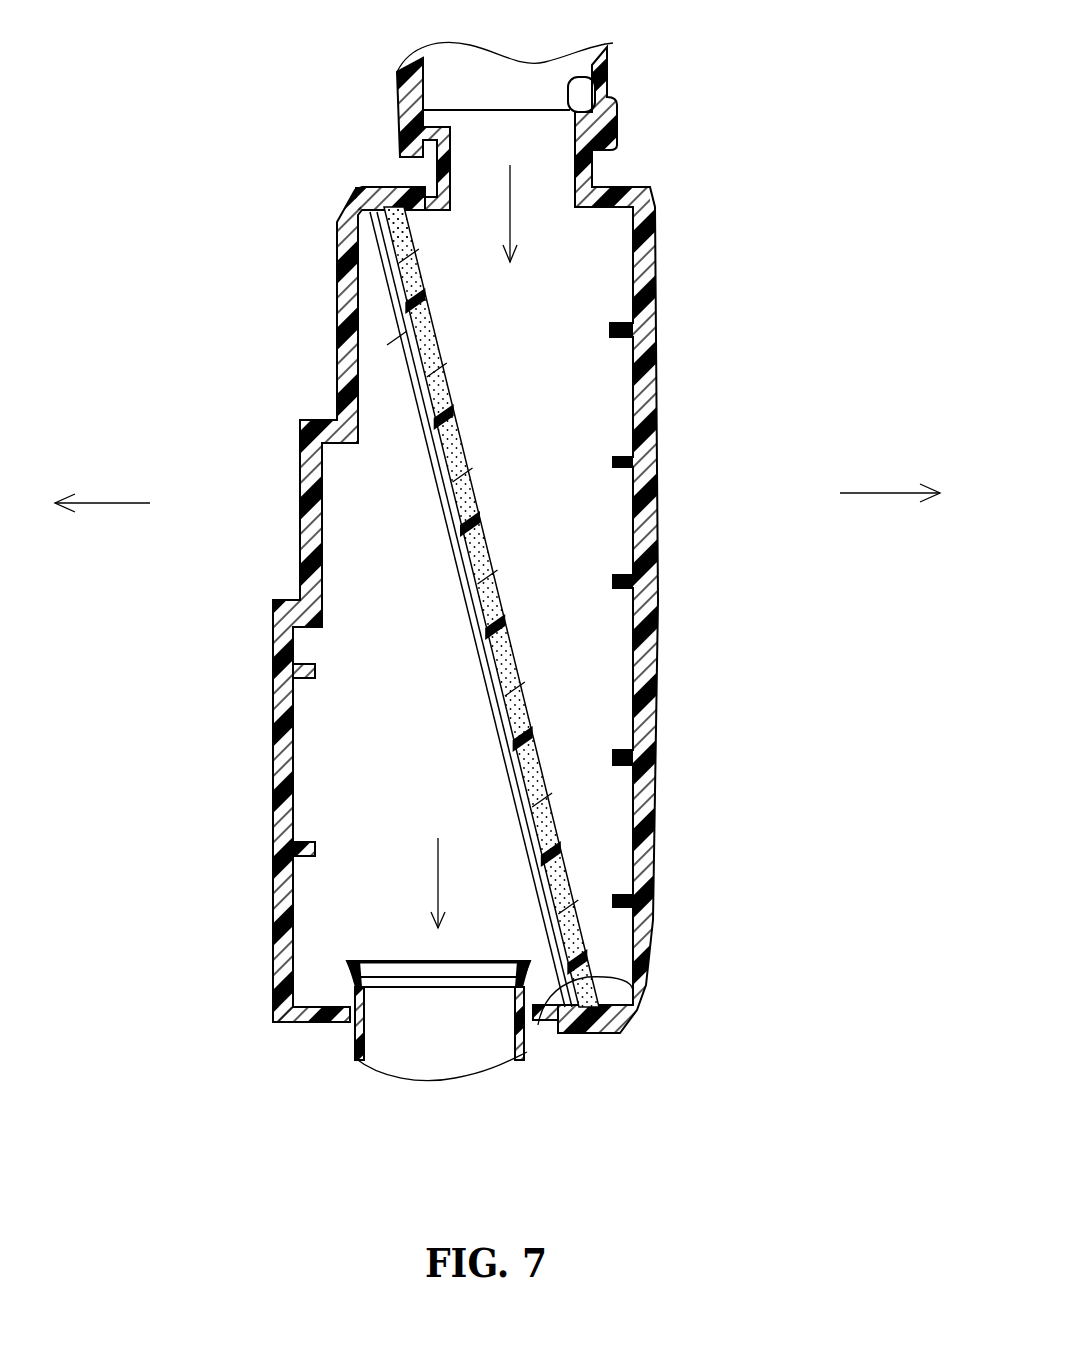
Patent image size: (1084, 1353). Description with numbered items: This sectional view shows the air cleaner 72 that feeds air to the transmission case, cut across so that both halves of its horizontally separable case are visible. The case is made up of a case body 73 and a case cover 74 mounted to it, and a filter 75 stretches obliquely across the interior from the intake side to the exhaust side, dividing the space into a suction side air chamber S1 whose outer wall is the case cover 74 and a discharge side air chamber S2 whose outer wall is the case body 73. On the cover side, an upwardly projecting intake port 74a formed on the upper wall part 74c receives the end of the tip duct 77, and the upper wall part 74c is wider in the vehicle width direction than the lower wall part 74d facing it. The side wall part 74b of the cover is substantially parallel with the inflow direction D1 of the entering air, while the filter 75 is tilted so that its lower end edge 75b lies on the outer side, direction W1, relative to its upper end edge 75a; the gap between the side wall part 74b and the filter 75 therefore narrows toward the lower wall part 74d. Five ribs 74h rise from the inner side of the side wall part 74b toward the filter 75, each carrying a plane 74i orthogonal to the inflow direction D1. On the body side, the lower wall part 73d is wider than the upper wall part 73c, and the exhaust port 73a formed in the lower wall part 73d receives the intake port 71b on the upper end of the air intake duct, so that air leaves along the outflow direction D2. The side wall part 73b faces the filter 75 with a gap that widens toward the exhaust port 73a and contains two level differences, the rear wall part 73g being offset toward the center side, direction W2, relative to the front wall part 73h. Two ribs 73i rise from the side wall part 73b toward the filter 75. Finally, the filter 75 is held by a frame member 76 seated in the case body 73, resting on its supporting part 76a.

The air cleaner 72 is at (218, 140).
The tip duct 77 is at (401, 116).
The case body 73 is at (271, 610).
The exhaust port 73a is at (368, 1012).
The side wall part 73b is at (303, 558).
The upper wall part 73c is at (375, 188).
The lower wall part 73d is at (315, 1025).
The wall part 73g is at (275, 768).
The wall part 73h is at (338, 325).
The ribs 73i is at (315, 849).
The case cover 74 is at (654, 578).
The intake port 74a is at (600, 78).
The side wall part 74b is at (658, 508).
The upper wall part 74c is at (618, 188).
The lower wall part 74d is at (600, 1035).
The ribs 74h is at (612, 457).
The plane 74i is at (618, 326).
The filter 75 is at (551, 616).
The upper end edge 75a is at (410, 218).
The lower end edge 75b is at (603, 985).
The frame member 76 is at (542, 1035).
The supporting part 76a is at (416, 408).
The intake port 71b is at (385, 960).
The inflow direction D1 is at (513, 212).
The outflow direction D2 is at (450, 892).
The outer side direction W1 is at (893, 493).
The center side direction W2 is at (105, 503).
The suction side air chamber S1 is at (540, 324).
The discharge side air chamber S2 is at (405, 558).